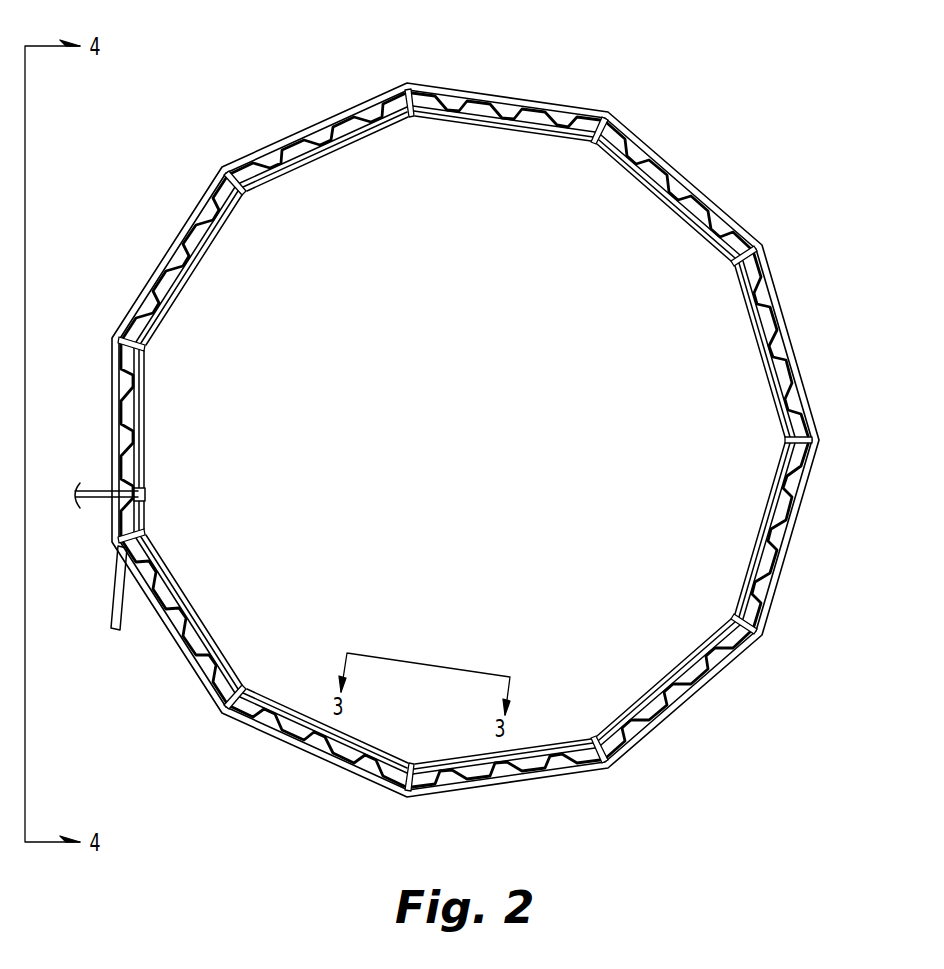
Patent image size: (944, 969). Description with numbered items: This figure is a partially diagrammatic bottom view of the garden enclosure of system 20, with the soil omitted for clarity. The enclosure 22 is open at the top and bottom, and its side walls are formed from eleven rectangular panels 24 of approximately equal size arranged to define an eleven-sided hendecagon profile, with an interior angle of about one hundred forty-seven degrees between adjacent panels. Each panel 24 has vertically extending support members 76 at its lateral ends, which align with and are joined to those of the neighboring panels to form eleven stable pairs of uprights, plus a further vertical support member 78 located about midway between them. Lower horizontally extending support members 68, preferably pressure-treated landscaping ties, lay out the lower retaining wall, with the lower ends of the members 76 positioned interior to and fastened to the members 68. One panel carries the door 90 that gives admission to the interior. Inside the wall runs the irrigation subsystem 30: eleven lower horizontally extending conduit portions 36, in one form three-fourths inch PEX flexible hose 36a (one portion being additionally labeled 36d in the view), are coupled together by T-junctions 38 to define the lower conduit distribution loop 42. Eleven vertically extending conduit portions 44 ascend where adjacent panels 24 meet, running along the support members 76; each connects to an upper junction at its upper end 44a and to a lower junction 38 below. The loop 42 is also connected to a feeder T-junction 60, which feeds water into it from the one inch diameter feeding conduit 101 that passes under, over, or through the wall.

The system 20 is at (675, 790).
The enclosure 22 is at (725, 700).
The rectangular panel 24 is at (305, 134).
The subsystem 30 is at (548, 215).
The lower horizontally extending conduit portion 36 is at (345, 141).
The PEX flexible hose 36a is at (165, 575).
The inner rail 36d is at (665, 197).
The T-junction 38 is at (238, 193).
The lower conduit distribution loop 42 is at (200, 628).
The vertically extending conduit portion 44 is at (140, 345).
The upper end of conduit portion 44a is at (415, 795).
The feeder T-junction 60 is at (135, 492).
The lower horizontally extending support member 68 is at (365, 110).
The vertically extending support member 76 is at (222, 167).
The vertically extending support member 78 is at (330, 132).
The door 90 is at (113, 625).
The feeding conduit 101 is at (82, 488).